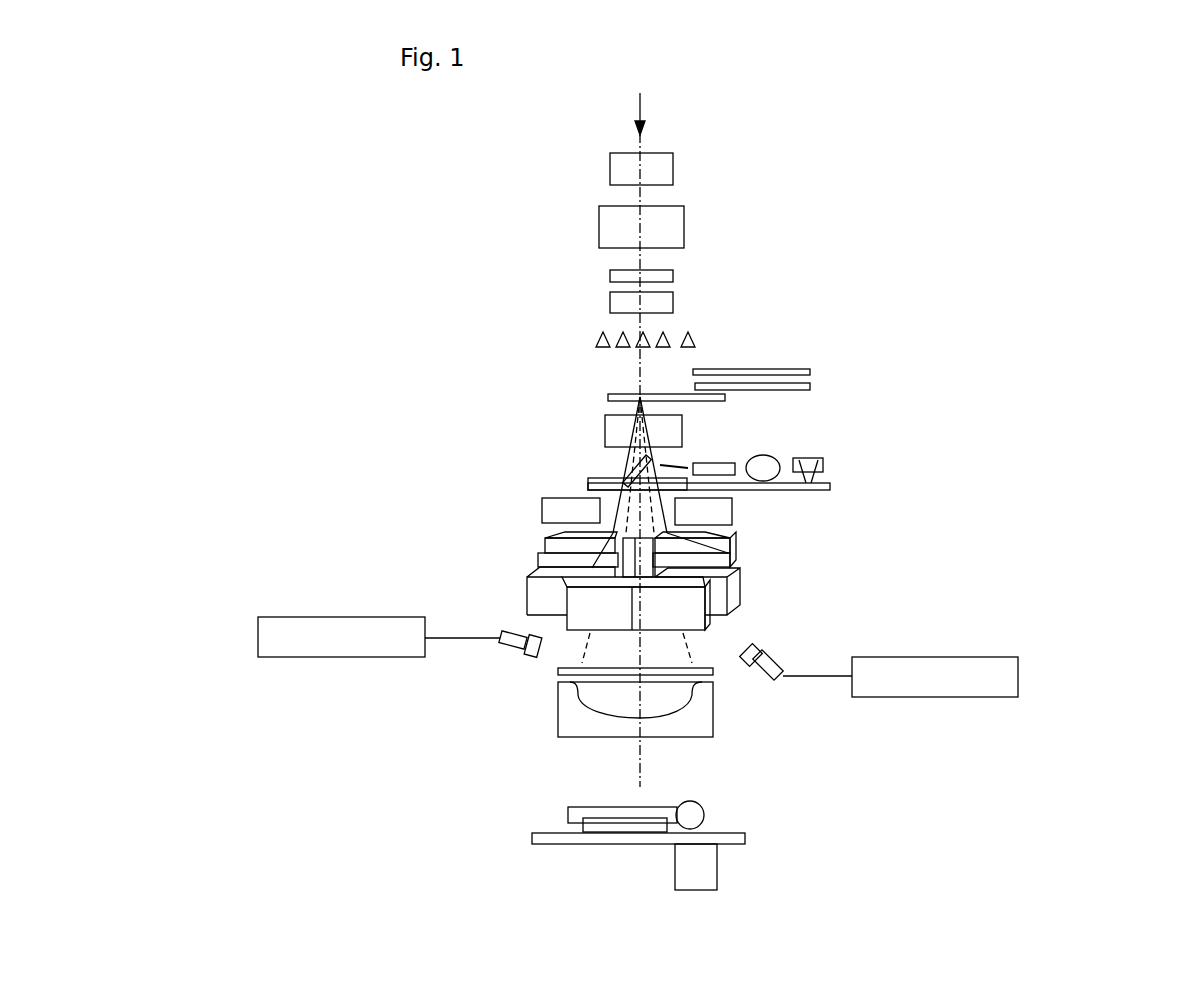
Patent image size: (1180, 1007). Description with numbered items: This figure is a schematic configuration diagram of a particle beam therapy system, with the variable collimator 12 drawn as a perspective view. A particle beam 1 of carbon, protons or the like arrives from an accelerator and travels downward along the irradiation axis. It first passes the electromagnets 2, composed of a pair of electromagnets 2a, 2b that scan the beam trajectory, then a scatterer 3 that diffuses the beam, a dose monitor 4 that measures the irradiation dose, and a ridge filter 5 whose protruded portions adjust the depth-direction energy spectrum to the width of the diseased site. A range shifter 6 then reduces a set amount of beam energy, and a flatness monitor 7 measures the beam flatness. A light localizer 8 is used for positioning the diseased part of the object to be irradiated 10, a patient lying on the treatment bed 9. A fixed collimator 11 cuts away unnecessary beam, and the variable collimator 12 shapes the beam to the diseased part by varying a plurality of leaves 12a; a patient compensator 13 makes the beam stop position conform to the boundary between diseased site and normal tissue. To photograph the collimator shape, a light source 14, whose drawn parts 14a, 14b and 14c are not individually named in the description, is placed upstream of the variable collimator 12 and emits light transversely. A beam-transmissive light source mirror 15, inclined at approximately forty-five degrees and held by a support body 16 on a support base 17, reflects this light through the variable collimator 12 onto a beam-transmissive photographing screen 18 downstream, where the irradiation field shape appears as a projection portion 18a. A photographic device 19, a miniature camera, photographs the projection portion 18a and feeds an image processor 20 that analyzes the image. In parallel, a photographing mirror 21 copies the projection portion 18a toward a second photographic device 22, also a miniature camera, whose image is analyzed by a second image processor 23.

The particle beam 1 is at (641, 97).
The electromagnets 2 is at (732, 197).
The electromagnet 2a is at (667, 170).
The electromagnet 2b is at (678, 230).
The scatterer 3 is at (665, 275).
The dose monitor 4 is at (667, 302).
The ridge filter 5 is at (693, 337).
The range shifter 6 is at (808, 385).
The flatness monitor 7 is at (612, 430).
The light localizer 8 is at (823, 465).
The treatment bed 9 is at (700, 865).
The object to be irradiated 10 is at (695, 815).
The fixed collimator 11 is at (732, 513).
The variable collimator 12 is at (738, 592).
The leaves 12a is at (527, 590).
The patient compensator 13 is at (695, 716).
The light source 14 is at (713, 465).
The beam splitter element 14a is at (678, 468).
The reflecting plates 14b is at (590, 566).
The detector optics 14c is at (512, 650).
The light source mirror 15 is at (625, 472).
The support body 16 is at (587, 485).
The support base 17 is at (830, 487).
The photographing screen 18 is at (529, 708).
The projection portion 18a is at (582, 652).
The photographic device 19 is at (505, 632).
The image processor 20 is at (258, 638).
The photographing mirror 21 is at (700, 638).
The photographic device 22 is at (773, 655).
The image processor 23 is at (1018, 676).